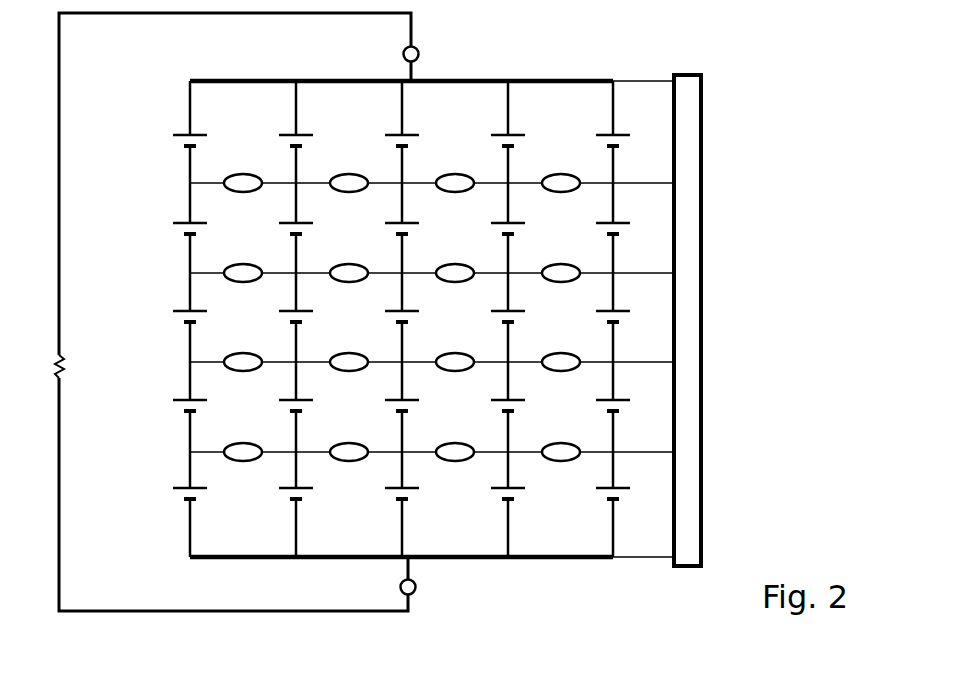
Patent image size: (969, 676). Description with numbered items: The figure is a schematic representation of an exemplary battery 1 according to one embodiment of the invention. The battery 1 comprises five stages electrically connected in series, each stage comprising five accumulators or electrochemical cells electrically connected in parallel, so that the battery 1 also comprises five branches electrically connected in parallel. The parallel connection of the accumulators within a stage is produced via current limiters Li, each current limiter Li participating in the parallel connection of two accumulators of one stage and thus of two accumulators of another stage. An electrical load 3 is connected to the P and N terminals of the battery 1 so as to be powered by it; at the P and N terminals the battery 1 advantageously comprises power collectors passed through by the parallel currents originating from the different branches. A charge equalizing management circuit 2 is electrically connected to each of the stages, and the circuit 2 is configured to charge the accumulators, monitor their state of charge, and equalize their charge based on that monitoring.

The battery 1 is at (388, 284).
The charge equalizing management circuit 2 is at (690, 73).
The electrical load 3 is at (57, 366).
The current limiter Li is at (242, 174).
The P terminal P is at (416, 52).
The N terminal N is at (415, 576).